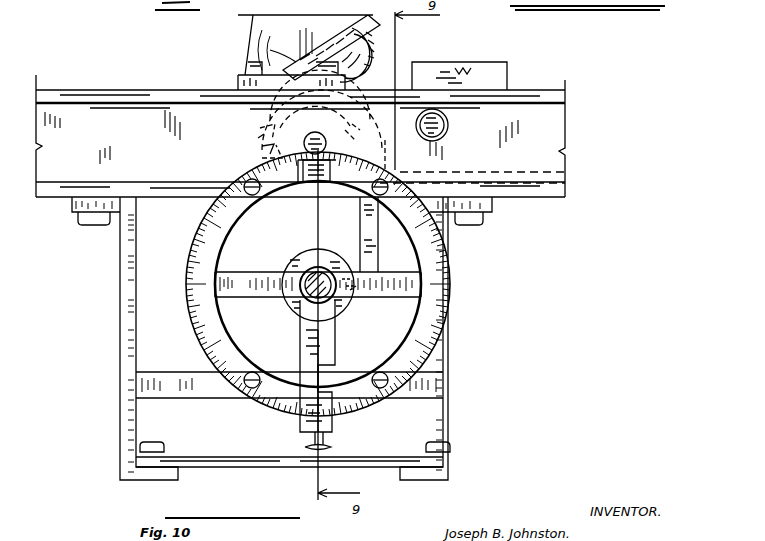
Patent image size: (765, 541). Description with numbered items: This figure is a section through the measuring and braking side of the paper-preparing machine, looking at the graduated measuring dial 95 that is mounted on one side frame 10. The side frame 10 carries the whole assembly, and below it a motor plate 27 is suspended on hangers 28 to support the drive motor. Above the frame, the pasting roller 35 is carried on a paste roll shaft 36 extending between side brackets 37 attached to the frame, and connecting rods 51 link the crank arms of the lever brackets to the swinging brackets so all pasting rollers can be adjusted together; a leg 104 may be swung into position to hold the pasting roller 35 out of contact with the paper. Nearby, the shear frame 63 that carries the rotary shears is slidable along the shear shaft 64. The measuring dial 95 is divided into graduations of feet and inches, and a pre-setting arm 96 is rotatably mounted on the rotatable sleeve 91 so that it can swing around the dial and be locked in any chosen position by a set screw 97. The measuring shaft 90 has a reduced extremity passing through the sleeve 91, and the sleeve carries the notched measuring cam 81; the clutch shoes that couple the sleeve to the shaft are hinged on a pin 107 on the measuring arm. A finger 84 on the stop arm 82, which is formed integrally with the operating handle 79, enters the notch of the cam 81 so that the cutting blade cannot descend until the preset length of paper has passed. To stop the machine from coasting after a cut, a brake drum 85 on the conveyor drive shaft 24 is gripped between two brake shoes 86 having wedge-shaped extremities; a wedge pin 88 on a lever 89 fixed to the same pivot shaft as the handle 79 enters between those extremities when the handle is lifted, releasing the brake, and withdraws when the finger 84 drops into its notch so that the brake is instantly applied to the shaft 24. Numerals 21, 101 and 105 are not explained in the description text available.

The side frame 10 is at (132, 123).
The shaft 21 is at (270, 118).
The drive shaft 24 is at (326, 128).
The motor plate 27 is at (246, 445).
The hangers 28 is at (452, 381).
The pasting roller 35 is at (362, 70).
The paste roll shaft 36 is at (318, 25).
The side brackets 37 is at (246, 68).
The connecting rods 51 is at (357, 40).
The shear frame 63 is at (505, 78).
The shear shaft 64 is at (446, 125).
The operating handle 79 is at (565, 165).
The notched measuring cam 81 is at (292, 261).
The stop arm 82 is at (376, 248).
The finger 84 is at (356, 292).
The brake drum 85 is at (262, 146).
The brake shoes 86 is at (262, 162).
The wedge pin 88 is at (368, 132).
The lever 89 is at (385, 152).
The measuring shaft 90 is at (300, 296).
The rotatable sleeve 91 is at (326, 276).
The measuring dial 95 is at (430, 292).
The pre-setting arm 96 is at (310, 347).
The set screw 97 is at (332, 447).
The slide block 101 is at (322, 183).
The leg 104 is at (300, 62).
The guide 105 is at (300, 184).
The pin 107 is at (233, 134).